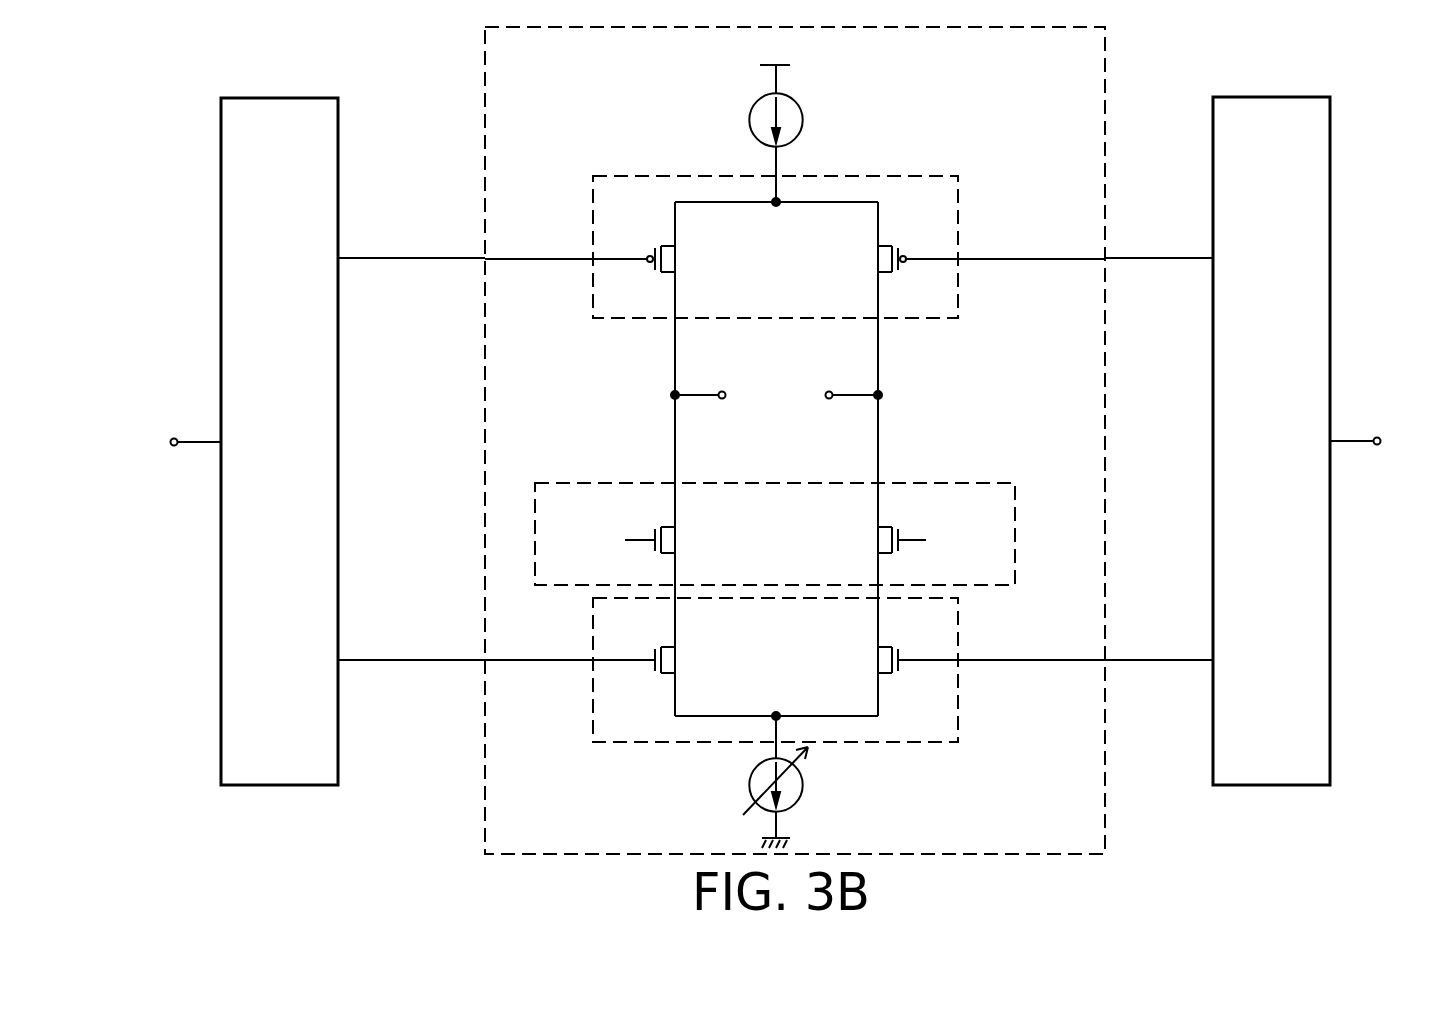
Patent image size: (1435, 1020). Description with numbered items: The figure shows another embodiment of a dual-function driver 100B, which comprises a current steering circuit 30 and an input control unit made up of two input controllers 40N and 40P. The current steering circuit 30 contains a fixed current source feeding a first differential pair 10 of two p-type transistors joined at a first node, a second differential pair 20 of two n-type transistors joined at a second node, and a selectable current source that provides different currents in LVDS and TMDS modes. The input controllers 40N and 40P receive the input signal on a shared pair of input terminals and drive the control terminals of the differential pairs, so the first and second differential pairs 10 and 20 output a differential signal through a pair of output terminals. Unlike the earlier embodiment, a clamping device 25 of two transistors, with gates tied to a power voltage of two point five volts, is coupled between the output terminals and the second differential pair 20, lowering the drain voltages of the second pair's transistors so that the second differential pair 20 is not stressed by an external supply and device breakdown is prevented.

The dual-function driver 100B is at (774, 462).
The current steering circuit 30 is at (834, 440).
The first differential pair 10 is at (959, 198).
The clamping device 25 is at (1015, 502).
The second differential pair 20 is at (959, 617).
The input controller 40N is at (228, 97).
The input controller 40P is at (1220, 96).